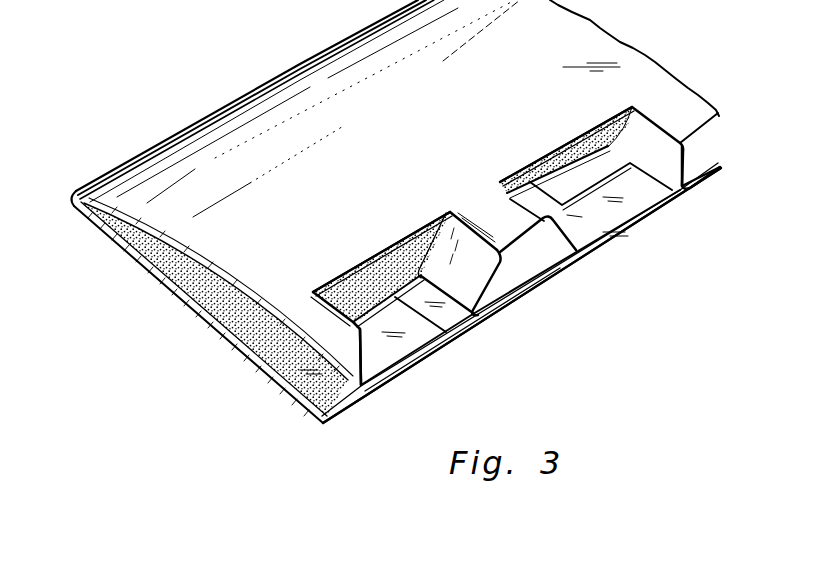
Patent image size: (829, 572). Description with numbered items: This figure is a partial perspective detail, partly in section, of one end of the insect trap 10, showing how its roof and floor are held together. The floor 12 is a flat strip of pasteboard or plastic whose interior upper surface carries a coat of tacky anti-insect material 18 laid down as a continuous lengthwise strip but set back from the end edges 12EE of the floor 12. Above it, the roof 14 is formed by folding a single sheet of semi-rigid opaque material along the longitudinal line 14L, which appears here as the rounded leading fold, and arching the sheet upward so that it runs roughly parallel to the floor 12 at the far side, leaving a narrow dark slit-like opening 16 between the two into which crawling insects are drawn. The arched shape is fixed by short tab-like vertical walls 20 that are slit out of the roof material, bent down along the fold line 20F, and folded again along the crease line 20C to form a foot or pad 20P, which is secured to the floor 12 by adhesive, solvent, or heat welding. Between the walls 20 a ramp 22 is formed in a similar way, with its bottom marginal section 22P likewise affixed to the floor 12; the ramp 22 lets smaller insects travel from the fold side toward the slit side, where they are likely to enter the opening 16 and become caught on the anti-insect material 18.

The insect trap 10 is at (232, 103).
The floor 12 is at (558, 255).
The end edges of the floor 12EE is at (508, 305).
The roof 14 is at (628, 66).
The longitudinal fold line 14L is at (72, 196).
The slit-like opening 16 is at (372, 278).
The coat of anti-insect material 18 is at (230, 308).
The tab-like vertical walls 20 is at (637, 124).
The fold line 20F is at (335, 297).
The crease line 20C is at (350, 372).
The foot or pad 20P is at (385, 360).
The ramps 22 is at (448, 252).
The bottom marginal section of ramp 22P is at (444, 332).